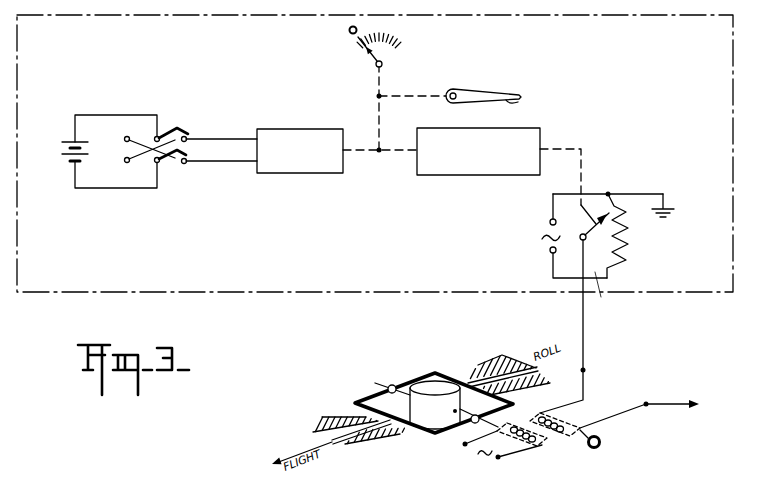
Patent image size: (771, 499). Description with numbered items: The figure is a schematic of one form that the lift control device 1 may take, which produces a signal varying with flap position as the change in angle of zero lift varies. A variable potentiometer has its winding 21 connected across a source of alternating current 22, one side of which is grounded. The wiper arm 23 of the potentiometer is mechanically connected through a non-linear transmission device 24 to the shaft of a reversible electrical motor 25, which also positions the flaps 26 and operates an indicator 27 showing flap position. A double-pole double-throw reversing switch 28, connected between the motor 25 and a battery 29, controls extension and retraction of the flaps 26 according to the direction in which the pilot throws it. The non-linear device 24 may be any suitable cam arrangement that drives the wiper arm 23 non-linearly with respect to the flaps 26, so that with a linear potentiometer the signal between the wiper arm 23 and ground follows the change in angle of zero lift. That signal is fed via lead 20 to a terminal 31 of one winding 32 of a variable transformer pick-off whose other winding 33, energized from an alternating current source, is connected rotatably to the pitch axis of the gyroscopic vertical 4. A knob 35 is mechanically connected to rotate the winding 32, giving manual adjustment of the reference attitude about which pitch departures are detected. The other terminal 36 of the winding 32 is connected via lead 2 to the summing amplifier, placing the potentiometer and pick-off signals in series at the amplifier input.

The lift control device 1 is at (735, 151).
The lead 2 is at (672, 406).
The gyroscopic vertical 4 is at (366, 388).
The lead 20 is at (585, 314).
The potentiometer winding 21 is at (632, 240).
The source of alternating current 22 is at (545, 238).
The wiper arm 23 is at (595, 237).
The non-linear transmission device 24 is at (540, 136).
The reversible electrical motor 25 is at (298, 129).
The flaps 26 is at (522, 101).
The indicator 27 is at (398, 42).
The double-pole double-throw reversing switch 28 is at (162, 134).
The battery 29 is at (68, 139).
The terminal 31 is at (586, 370).
The winding 32 is at (567, 438).
The winding 33 is at (541, 446).
The knob 35 is at (600, 444).
The terminal 36 is at (648, 402).